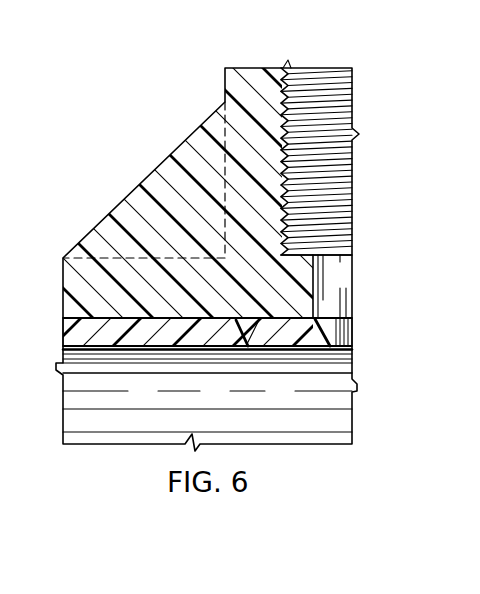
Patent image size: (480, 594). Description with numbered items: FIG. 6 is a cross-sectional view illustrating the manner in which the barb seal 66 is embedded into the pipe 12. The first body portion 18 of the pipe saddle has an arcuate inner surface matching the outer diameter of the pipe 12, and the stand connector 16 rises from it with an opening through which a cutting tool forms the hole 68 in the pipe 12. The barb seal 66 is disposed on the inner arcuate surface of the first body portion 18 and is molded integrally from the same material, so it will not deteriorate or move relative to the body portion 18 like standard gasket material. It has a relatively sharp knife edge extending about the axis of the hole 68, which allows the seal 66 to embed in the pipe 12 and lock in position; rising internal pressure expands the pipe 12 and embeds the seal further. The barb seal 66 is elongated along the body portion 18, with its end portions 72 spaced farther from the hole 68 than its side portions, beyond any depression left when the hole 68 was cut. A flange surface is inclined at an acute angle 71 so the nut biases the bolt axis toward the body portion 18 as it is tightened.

The pipe 12 is at (162, 333).
The stand connector 16 is at (261, 80).
The first body portion 18 is at (97, 297).
The barb seal 66 is at (230, 326).
The hole 68 is at (320, 297).
The acute angle 71 is at (233, 322).
The end portions 72 is at (251, 326).